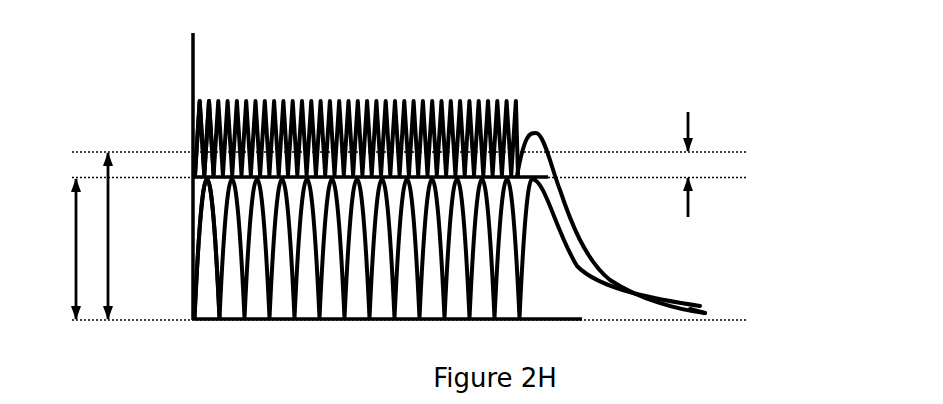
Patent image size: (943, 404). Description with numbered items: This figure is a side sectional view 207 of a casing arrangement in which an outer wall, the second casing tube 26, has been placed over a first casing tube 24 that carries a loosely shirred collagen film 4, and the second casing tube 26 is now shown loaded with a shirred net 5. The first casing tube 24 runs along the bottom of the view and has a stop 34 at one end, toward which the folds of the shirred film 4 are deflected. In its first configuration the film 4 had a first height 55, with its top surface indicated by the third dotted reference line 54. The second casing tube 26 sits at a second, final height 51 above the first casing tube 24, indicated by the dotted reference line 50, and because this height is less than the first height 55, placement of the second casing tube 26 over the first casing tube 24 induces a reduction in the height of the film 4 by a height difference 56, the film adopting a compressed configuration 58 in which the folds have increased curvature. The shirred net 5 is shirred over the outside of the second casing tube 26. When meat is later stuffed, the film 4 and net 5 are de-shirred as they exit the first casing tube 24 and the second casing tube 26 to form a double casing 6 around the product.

The side sectional view 207 is at (150, 64).
The stop 34 is at (190, 129).
The shirred net 5 is at (359, 118).
The second casing tube 26 is at (551, 177).
The loosely shirred film 4 is at (553, 216).
The double casing 6 is at (716, 312).
The first casing tube 24 is at (588, 319).
The dotted reference line 50 is at (426, 177).
The third dotted reference line 54 is at (426, 152).
The height difference 56 is at (683, 164).
The compressed configuration 58 is at (220, 192).
The second height 51 is at (89, 249).
The first height 55 is at (125, 236).